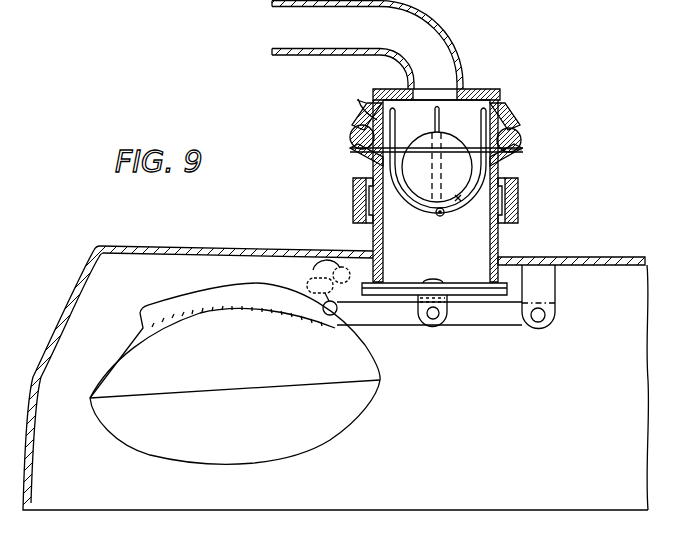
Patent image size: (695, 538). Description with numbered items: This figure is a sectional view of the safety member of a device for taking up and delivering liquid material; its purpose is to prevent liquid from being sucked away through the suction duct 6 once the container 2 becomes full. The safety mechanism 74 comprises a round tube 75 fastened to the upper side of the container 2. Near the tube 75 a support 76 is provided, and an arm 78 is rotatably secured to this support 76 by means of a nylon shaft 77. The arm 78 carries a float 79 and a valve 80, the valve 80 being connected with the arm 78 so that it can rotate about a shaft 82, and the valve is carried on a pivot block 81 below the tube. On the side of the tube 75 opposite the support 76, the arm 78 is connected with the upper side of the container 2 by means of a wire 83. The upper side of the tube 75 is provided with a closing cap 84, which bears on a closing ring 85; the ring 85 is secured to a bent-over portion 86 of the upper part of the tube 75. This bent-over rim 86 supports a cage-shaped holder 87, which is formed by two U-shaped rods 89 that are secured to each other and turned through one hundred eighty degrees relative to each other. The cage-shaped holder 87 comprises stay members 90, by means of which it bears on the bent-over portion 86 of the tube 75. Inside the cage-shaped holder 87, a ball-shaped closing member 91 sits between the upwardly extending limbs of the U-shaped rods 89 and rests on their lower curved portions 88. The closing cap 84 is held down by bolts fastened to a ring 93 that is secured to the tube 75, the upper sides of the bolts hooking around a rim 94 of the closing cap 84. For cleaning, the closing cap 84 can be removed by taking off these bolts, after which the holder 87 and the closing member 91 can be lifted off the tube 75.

The container 2 is at (207, 250).
The suction duct 6 is at (283, 55).
The safety mechanism 74 is at (534, 152).
The round tube 75 is at (505, 258).
The support 76 is at (556, 278).
The nylon shaft 77 is at (546, 318).
The arm 78 is at (498, 327).
The float 79 is at (379, 396).
The valve 80 is at (465, 283).
The pivot block 81 is at (420, 326).
The shaft 82 is at (440, 324).
The wire 83 is at (310, 283).
The closing cap 84 is at (490, 91).
The closing ring 85 is at (520, 128).
The bent-over portion 86 is at (522, 155).
The cage-shaped holder 87 is at (402, 200).
The lower curved portions 88 is at (435, 218).
The U-shaped rods 89 is at (430, 125).
The stay members 90 is at (372, 155).
The ball-shaped closing member 91 is at (460, 203).
The ring 93 is at (353, 210).
The rim 94 is at (357, 102).